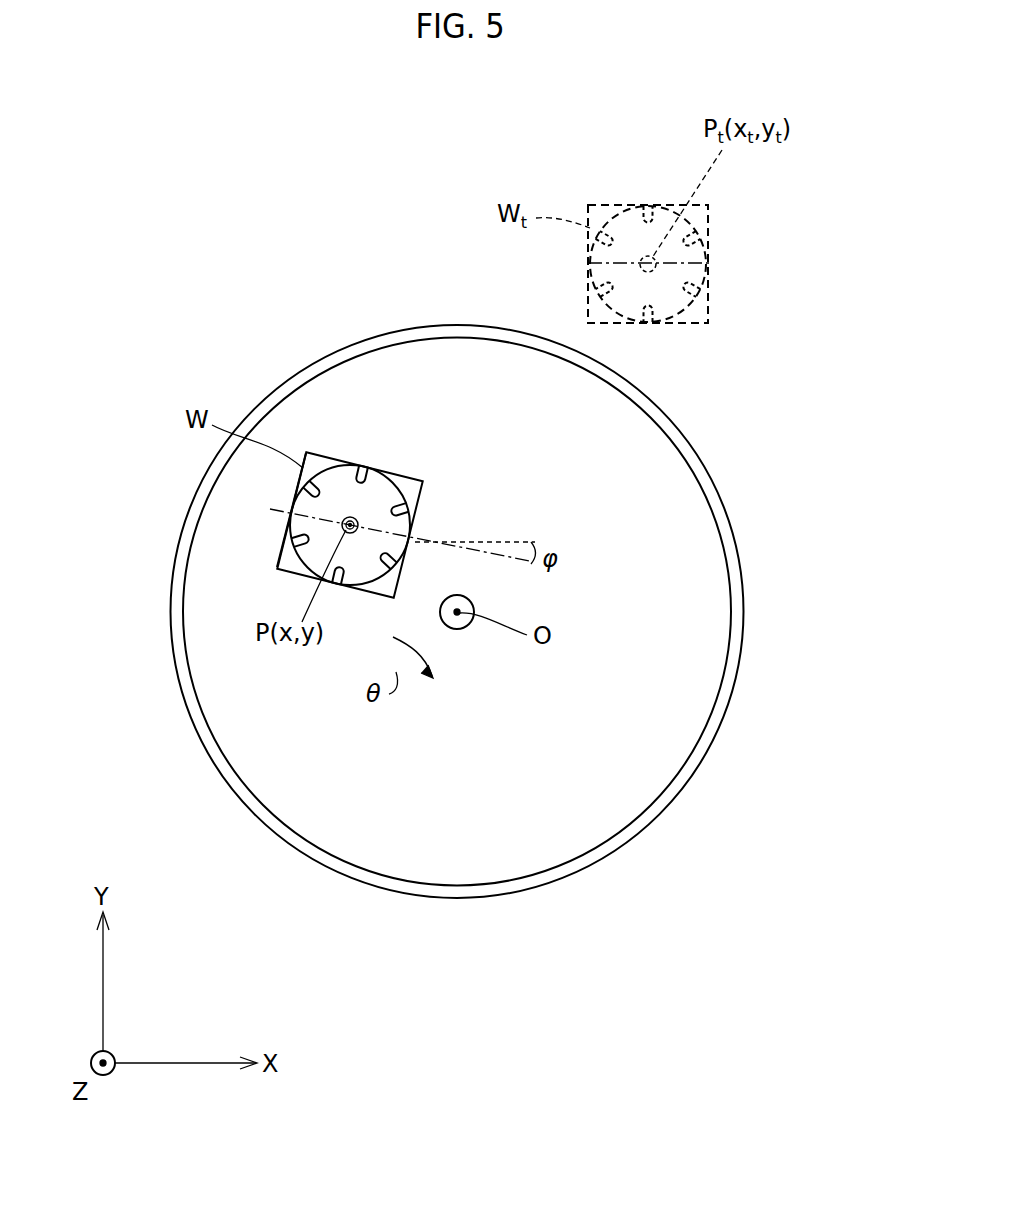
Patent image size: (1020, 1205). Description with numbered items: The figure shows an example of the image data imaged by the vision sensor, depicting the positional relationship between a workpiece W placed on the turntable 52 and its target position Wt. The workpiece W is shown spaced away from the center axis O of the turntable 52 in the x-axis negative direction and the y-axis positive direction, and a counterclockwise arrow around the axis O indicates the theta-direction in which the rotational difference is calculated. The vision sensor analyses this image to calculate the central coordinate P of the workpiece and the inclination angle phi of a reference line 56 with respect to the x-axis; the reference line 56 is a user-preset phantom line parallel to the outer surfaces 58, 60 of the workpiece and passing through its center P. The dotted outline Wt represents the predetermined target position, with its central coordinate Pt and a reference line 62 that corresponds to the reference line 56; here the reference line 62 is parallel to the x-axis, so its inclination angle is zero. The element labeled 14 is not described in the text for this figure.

The rotary table 14 is at (675, 680).
The turntable 52 is at (683, 790).
The reference line 56 is at (396, 530).
The outer surface 58 is at (343, 462).
The outer surface 60 is at (288, 572).
The reference line 62 is at (690, 258).